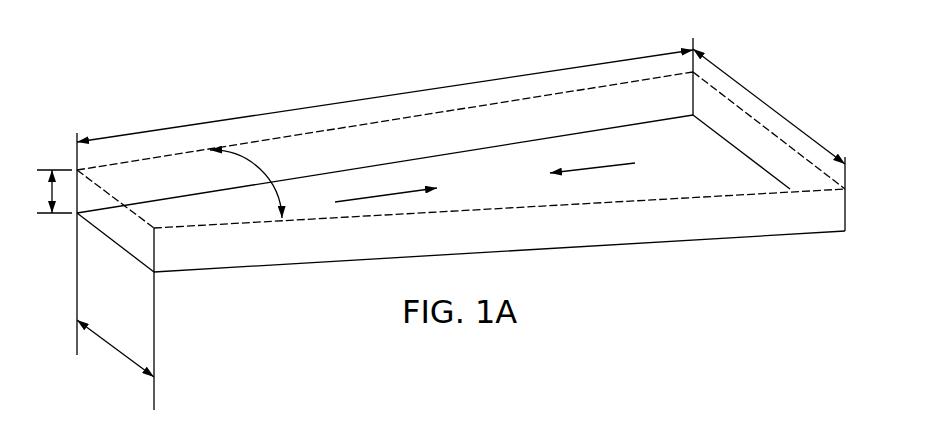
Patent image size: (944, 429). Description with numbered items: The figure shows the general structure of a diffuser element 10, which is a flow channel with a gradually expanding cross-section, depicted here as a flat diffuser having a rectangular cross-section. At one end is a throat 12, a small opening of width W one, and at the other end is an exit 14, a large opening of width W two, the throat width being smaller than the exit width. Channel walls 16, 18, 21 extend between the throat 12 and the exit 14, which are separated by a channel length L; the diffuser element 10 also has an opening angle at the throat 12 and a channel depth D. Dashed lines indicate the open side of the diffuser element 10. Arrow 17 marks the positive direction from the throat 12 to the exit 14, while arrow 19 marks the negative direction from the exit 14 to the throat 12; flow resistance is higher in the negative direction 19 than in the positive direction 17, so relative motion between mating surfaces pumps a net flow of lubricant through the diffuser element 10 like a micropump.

The diffuser element 10 is at (437, 73).
The throat 12 is at (123, 228).
The exit 14 is at (745, 128).
The channel wall 16 is at (539, 110).
The arrow 17 is at (383, 195).
The channel wall 18 is at (557, 237).
The arrow 19 is at (600, 170).
The channel wall 21 is at (640, 143).